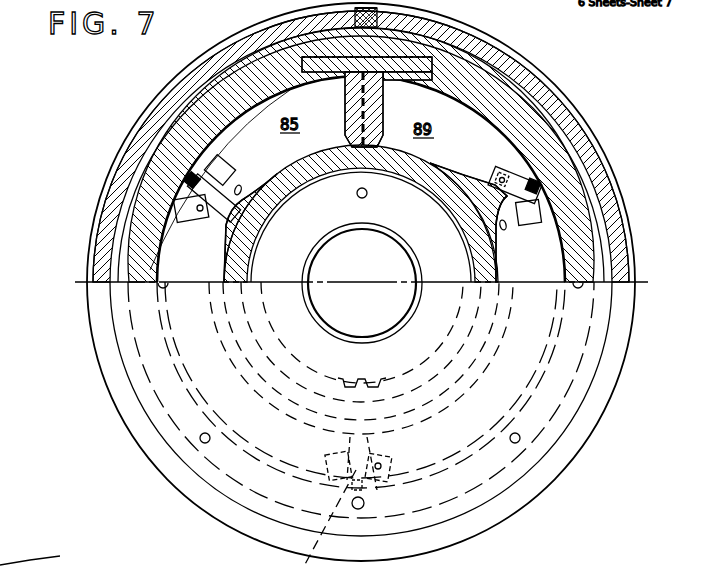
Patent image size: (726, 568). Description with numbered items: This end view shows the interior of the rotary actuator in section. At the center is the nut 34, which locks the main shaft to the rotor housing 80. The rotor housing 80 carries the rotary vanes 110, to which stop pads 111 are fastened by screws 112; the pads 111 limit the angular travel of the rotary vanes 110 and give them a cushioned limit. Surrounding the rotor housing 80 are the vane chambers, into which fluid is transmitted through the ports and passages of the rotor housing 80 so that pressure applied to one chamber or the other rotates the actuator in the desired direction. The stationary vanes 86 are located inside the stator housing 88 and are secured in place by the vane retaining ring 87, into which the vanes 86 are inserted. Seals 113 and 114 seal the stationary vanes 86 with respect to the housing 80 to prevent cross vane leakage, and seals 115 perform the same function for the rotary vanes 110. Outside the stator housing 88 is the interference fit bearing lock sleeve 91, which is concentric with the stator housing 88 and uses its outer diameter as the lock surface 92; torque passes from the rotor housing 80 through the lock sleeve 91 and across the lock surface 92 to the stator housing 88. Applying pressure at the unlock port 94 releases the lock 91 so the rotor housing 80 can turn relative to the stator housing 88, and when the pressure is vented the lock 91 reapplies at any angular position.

The nut 34 is at (427, 240).
The rotor housing 80 is at (423, 173).
The stationary vane 86 is at (347, 118).
The vane retaining ring 87 is at (580, 262).
The stator housing 88 is at (464, 58).
The interference fit bearing lock sleeve 91 is at (148, 133).
The lock surface 92 is at (147, 150).
The unlock port 94 is at (380, 13).
The rotary vane 110 is at (514, 200).
The stop pad 111 is at (227, 168).
The screw 112 is at (496, 178).
The seal 113 is at (359, 150).
The seal 114 is at (322, 64).
The seal 115 is at (188, 181).